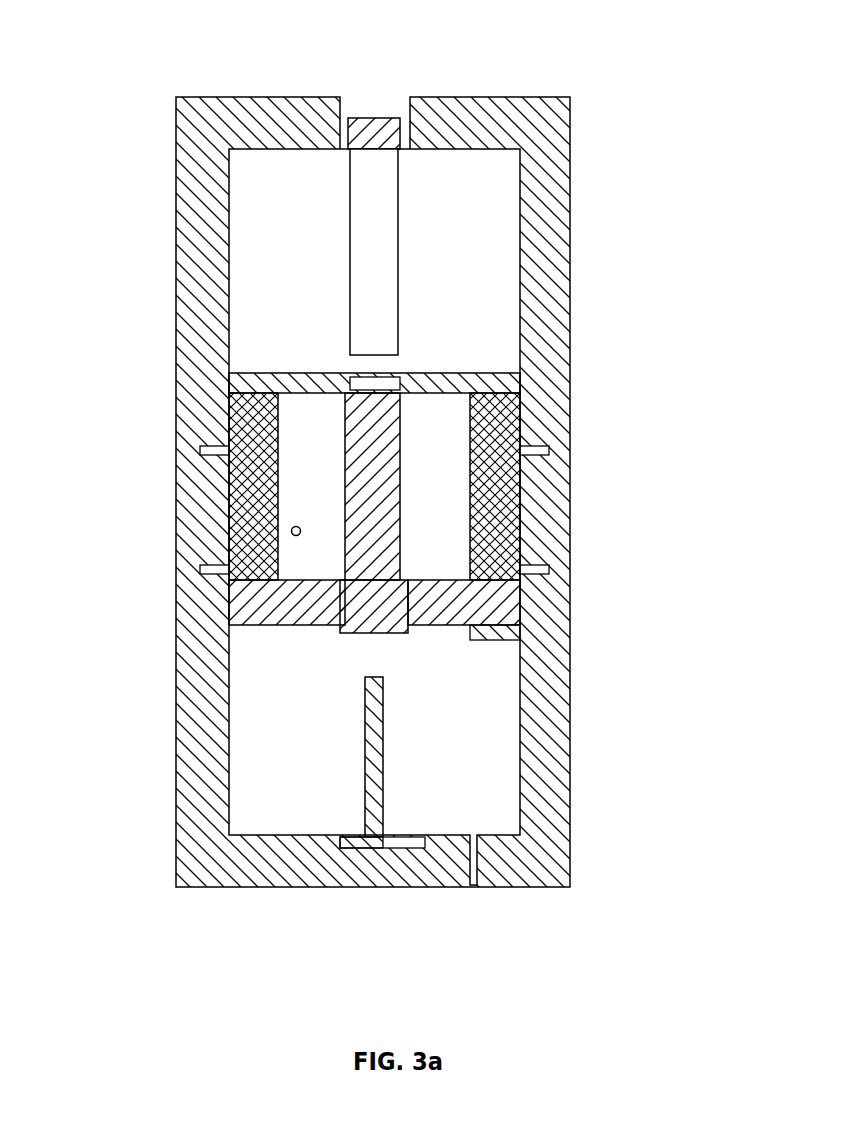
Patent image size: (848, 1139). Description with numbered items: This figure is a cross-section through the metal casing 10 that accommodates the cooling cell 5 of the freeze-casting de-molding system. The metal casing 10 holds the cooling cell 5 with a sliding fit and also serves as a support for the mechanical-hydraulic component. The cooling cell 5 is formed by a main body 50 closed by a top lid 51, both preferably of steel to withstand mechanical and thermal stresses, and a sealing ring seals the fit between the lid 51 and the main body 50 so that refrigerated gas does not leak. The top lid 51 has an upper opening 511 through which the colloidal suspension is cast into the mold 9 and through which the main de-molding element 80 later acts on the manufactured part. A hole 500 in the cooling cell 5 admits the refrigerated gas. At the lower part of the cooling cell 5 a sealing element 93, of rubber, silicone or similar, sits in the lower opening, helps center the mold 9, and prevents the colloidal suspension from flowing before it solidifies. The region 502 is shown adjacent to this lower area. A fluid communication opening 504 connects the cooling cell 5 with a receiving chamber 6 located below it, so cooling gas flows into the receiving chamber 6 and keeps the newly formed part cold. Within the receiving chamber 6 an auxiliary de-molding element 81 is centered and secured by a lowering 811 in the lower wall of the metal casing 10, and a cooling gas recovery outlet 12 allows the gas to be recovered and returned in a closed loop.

The metal casing 10 is at (264, 97).
The main de-molding element 80 is at (398, 258).
The top lid 51 is at (290, 383).
The upper opening 511 is at (400, 383).
The cooling cell 5 is at (307, 449).
The main body 50 is at (228, 475).
The refrigerated gas entry hole 500 is at (291, 531).
The mold 9 is at (400, 509).
The fluid communication opening 504 is at (435, 596).
The sealing element 93 is at (408, 627).
The bottom block 502 is at (350, 598).
The receiving chamber 6 is at (428, 718).
The auxiliary de-molding element 81 is at (365, 755).
The lowering 811 is at (345, 845).
The cooling gas recovery outlet 12 is at (477, 851).